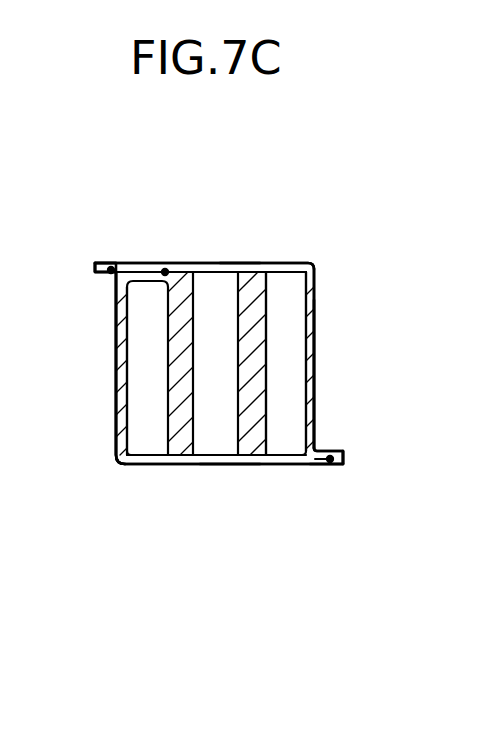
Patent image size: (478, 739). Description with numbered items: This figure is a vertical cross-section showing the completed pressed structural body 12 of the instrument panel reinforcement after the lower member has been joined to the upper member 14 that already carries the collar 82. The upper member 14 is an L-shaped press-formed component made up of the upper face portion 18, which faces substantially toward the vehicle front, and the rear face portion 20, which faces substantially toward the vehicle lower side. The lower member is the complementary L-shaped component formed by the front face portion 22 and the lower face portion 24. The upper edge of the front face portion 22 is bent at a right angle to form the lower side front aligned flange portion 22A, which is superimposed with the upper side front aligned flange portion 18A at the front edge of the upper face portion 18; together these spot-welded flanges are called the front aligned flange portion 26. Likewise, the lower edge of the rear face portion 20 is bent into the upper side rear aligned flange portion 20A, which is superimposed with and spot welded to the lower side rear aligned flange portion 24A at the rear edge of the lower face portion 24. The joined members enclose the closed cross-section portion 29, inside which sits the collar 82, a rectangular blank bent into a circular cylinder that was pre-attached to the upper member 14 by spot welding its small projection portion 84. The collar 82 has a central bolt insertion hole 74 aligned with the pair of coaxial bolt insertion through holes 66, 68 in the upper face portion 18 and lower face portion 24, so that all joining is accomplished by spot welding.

The pressed structural body 12 is at (310, 238).
The upper member 14 is at (315, 331).
The upper face portion 18 is at (272, 262).
The upper side front aligned flange portion 18A is at (106, 262).
The rear face portion 20 is at (315, 358).
The upper side rear aligned flange portion 20A is at (342, 448).
The front face portion 22 is at (116, 393).
The lower side front aligned flange portion 22A is at (111, 272).
The lower face portion 24 is at (272, 465).
The lower side rear aligned flange portion 24A is at (330, 460).
The front aligned flange portion 26 is at (100, 190).
The closed cross-section portion 29 is at (296, 379).
The bolt insertion through hole 66 is at (236, 262).
The bolt insertion through hole 68 is at (228, 465).
The bolt insertion hole 74 is at (196, 413).
The collar 82 is at (165, 423).
The small projection portion 84 is at (165, 272).